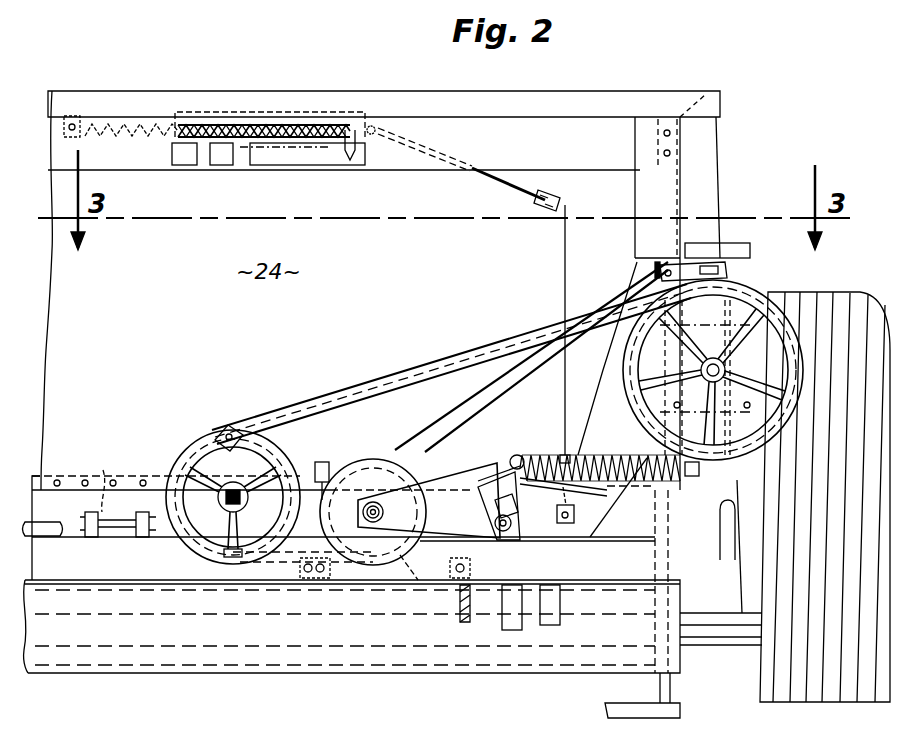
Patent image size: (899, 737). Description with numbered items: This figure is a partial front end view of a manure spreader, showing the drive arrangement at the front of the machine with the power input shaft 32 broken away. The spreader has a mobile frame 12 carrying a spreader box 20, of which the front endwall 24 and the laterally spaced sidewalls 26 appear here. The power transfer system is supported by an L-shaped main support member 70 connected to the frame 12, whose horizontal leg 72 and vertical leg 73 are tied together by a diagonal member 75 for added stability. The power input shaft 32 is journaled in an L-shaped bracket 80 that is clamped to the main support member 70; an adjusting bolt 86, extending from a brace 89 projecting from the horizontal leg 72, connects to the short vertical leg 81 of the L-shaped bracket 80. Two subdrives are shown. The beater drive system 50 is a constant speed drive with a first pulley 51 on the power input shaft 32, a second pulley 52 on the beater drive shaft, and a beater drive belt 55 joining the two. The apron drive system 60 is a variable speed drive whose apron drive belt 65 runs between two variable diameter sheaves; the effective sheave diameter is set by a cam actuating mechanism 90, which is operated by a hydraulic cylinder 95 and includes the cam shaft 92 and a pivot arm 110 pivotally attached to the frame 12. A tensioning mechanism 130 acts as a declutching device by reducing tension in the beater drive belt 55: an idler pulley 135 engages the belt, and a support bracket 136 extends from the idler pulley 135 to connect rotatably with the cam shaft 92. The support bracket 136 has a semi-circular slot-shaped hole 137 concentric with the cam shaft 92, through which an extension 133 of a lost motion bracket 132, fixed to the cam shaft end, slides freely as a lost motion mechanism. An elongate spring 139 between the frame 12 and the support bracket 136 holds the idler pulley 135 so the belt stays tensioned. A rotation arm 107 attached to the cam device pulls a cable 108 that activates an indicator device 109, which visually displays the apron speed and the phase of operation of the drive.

The mobile frame 12 is at (503, 675).
The spreader box 20 is at (562, 88).
The front endwall 24 is at (340, 320).
The sidewalls 26 is at (685, 180).
The power input shaft 32 is at (246, 485).
The beater drive system 50 is at (195, 395).
The first pulley 51 is at (192, 455).
The second pulley 52 is at (752, 300).
The beater drive belt 55 is at (413, 362).
The apron drive system 60 is at (197, 388).
The apron drive belt 65 is at (582, 503).
The main support member 70 is at (140, 582).
The horizontal leg 72 is at (343, 529).
The vertical leg 73 is at (735, 558).
The diagonal member 75 is at (462, 410).
The L-shaped bracket 80 is at (172, 542).
The short vertical leg 81 is at (142, 512).
The adjusting bolt 86 is at (104, 472).
The brace 89 is at (92, 528).
The cam actuating mechanism 90 is at (503, 425).
The cam shaft 92 is at (518, 530).
The hydraulic cylinder 95 is at (415, 592).
The rotation arm 107 is at (552, 540).
The cable 108 is at (567, 252).
The indicator device 109 is at (322, 99).
The pivot arm 110 is at (310, 468).
The tensioning mechanism 130 is at (275, 592).
The lost motion bracket 132 is at (503, 535).
The extension 133 is at (503, 468).
The idler pulley 135 is at (376, 566).
The support bracket 136 is at (440, 458).
The slot-shaped hole 137 is at (458, 540).
The elongate spring 139 is at (594, 462).